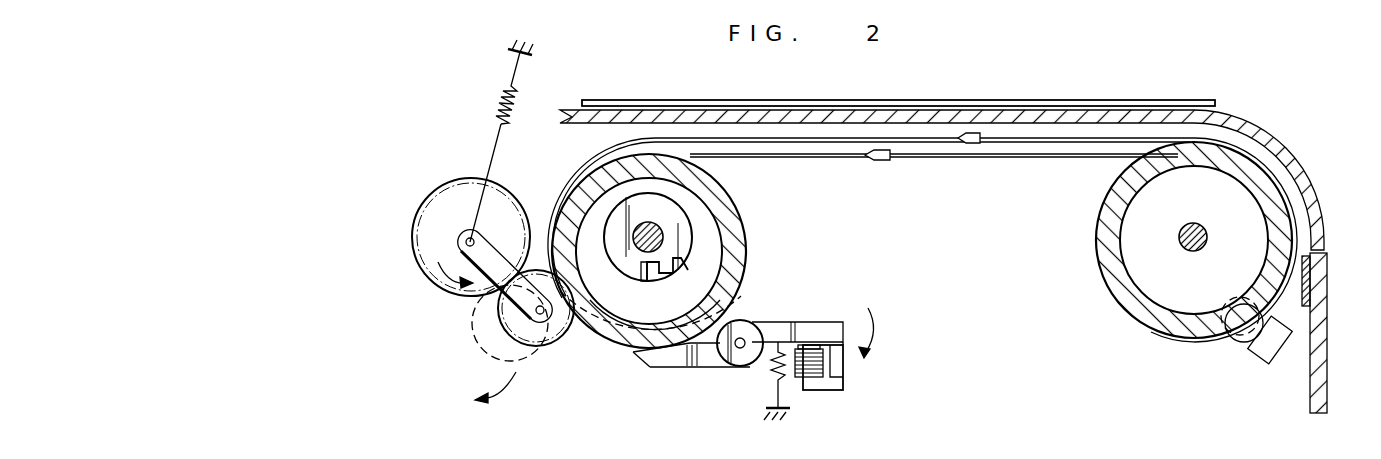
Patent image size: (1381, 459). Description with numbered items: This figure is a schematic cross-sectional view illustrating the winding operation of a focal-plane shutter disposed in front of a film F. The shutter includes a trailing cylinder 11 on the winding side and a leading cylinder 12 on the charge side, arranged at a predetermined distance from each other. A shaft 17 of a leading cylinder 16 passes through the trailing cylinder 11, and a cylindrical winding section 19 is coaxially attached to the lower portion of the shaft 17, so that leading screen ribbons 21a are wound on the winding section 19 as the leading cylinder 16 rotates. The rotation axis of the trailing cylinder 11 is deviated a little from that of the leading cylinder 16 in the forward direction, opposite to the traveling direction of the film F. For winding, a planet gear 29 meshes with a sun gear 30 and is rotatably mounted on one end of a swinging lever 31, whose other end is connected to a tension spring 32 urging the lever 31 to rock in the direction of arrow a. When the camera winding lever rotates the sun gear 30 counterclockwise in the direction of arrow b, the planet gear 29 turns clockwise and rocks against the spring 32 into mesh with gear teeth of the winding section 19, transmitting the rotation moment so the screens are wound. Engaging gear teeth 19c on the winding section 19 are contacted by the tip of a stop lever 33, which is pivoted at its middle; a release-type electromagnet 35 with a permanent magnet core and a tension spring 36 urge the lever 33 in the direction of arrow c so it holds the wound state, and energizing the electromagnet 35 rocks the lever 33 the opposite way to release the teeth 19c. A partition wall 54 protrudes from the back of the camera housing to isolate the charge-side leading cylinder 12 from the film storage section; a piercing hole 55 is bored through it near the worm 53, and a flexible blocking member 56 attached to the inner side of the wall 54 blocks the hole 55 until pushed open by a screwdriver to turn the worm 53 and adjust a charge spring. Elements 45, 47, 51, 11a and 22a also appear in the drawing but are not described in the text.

The film F is at (1045, 99).
The leading screen ribbons 21a is at (824, 138).
The partition wall 54 is at (1321, 205).
The piercing hole 55 is at (1327, 275).
The flexible blocking member 56 is at (1305, 292).
The leading cylinder on the charge side 12 is at (1128, 296).
The roller rubber ring 47 is at (1114, 262).
The roller shaft 45 is at (1182, 231).
The pinch roller 51 is at (1230, 336).
The worm 53 is at (1263, 358).
The cylindrical winding section 19 is at (593, 163).
The engaging gear teeth 19c is at (676, 301).
The leading cylinder 16 is at (731, 176).
The trailing cylinder 11 is at (730, 256).
The shaft 17 is at (663, 243).
The cam member 11a is at (665, 271).
The key plate 22a is at (645, 273).
The sun gear 30 is at (458, 196).
The swinging lever 31 is at (473, 232).
The tension spring 32 is at (500, 98).
The planet gear 29 is at (548, 331).
The stop lever 33 is at (811, 331).
The electromagnet 35 is at (838, 373).
The tension spring 36 is at (776, 376).
The arrow a is at (502, 387).
The arrow b is at (440, 289).
The arrow c is at (875, 333).